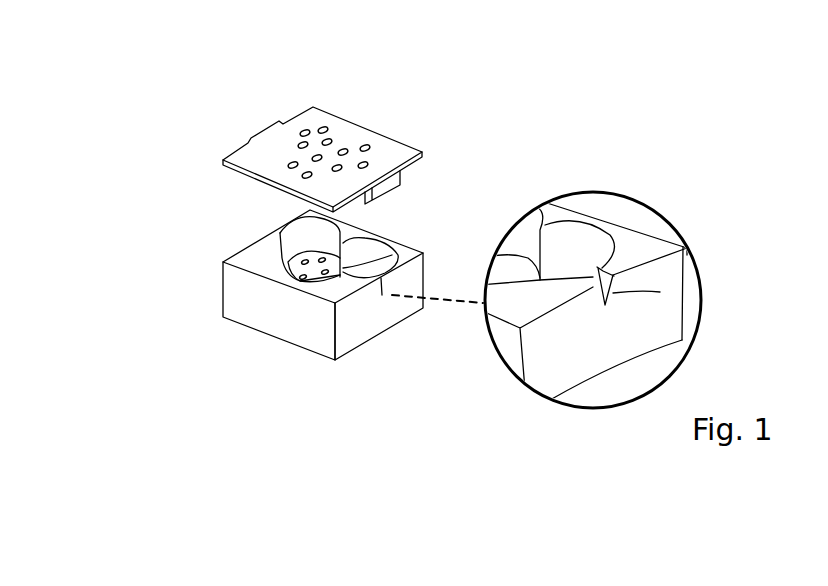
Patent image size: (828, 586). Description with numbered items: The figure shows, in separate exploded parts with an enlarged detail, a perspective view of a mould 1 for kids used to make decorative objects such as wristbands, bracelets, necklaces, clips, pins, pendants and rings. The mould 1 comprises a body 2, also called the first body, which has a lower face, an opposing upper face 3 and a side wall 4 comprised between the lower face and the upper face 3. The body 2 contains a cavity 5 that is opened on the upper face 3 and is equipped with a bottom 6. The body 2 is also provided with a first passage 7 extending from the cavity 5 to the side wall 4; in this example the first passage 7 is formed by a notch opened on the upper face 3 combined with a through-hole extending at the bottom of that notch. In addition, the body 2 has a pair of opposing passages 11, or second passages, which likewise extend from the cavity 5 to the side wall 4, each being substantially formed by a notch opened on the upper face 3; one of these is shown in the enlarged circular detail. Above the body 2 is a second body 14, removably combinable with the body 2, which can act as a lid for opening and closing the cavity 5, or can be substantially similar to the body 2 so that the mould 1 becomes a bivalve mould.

The mould 1 is at (150, 75).
The body 2 is at (274, 301).
The upper face 3 is at (240, 252).
The side wall 4 is at (323, 345).
The cavity 5 is at (298, 236).
The bottom 6 is at (297, 257).
The first passage 7 is at (368, 222).
The opposing passages 11 is at (660, 292).
The second body 14 is at (394, 135).